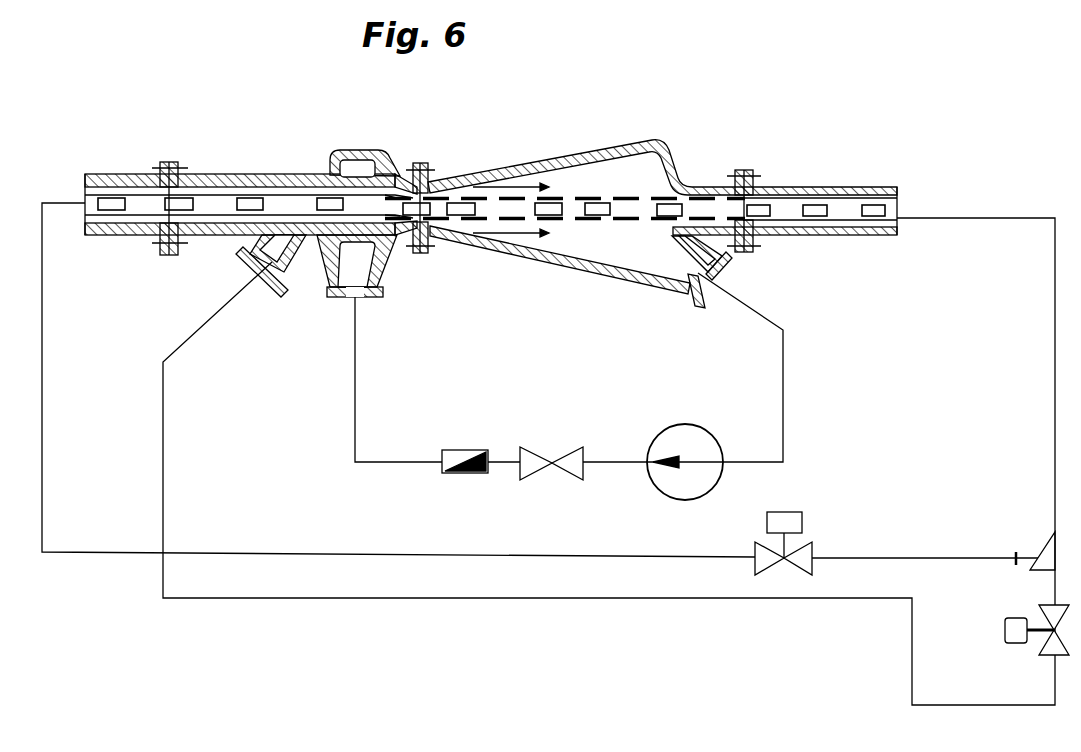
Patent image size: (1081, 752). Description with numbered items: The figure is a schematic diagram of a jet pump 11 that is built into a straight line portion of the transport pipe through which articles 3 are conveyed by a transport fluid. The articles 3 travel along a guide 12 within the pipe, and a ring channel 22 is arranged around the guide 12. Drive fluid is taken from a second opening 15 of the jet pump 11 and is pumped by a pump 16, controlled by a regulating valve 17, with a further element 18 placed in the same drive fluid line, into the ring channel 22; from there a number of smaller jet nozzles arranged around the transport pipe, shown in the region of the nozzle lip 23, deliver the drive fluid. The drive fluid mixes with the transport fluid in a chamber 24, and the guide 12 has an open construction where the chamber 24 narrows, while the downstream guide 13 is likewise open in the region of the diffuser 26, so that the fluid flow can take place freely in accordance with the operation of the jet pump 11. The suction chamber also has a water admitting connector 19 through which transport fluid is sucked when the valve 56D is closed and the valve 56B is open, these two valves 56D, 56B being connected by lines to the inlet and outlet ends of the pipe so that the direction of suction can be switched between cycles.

The articles 3 is at (110, 198).
The guide 12 is at (192, 185).
The ring channel 22 is at (352, 165).
The nozzle lip 23 is at (383, 180).
The chamber 24 is at (428, 170).
The diffuser 26 is at (522, 168).
The guide 13 is at (583, 197).
The jet pump 11 is at (547, 258).
The water admitting connector 19 is at (362, 270).
The second opening 15 is at (690, 272).
The filter 18 is at (455, 460).
The regulating valve 17 is at (568, 455).
The pump 16 is at (660, 440).
The valve 56D is at (800, 515).
The valve 56B is at (1008, 620).